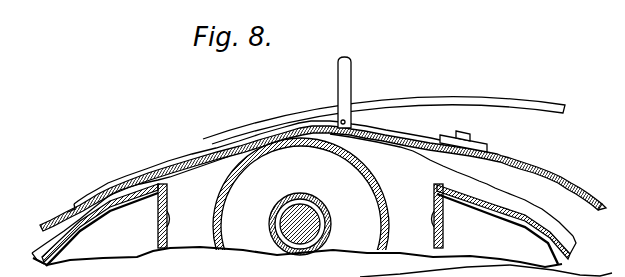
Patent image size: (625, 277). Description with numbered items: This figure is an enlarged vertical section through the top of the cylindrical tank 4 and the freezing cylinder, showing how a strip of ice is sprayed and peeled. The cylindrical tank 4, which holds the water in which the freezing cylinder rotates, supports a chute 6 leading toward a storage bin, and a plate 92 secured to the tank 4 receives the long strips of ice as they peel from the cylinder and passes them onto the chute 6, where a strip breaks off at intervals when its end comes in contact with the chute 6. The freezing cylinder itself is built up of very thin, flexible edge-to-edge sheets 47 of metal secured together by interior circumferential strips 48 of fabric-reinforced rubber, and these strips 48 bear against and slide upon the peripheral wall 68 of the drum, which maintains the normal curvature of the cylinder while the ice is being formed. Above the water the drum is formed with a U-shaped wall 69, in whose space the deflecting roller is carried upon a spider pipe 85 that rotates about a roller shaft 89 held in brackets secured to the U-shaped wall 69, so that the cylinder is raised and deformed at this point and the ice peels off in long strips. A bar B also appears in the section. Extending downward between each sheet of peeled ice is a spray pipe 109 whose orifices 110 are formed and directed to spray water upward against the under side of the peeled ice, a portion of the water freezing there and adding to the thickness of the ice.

The spray pipe 109 is at (351, 73).
The bar B is at (480, 104).
The orifices 110 is at (351, 121).
The plate 92 is at (444, 136).
The chute 6 is at (547, 172).
The cylindrical tank 4 is at (592, 208).
The sheets 47 is at (99, 190).
The circumferential strips 48 is at (197, 163).
The peripheral wall 68 is at (105, 221).
The U-shaped wall 69 is at (443, 239).
The spider pipe 85 is at (288, 194).
The roller shaft 89 is at (319, 216).